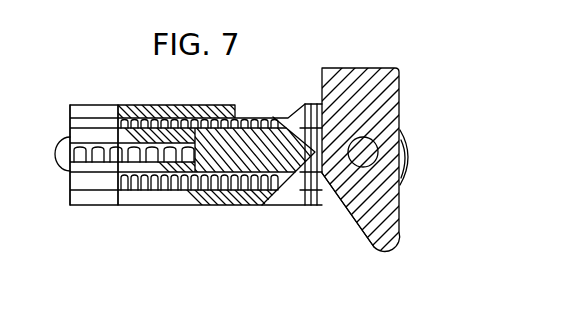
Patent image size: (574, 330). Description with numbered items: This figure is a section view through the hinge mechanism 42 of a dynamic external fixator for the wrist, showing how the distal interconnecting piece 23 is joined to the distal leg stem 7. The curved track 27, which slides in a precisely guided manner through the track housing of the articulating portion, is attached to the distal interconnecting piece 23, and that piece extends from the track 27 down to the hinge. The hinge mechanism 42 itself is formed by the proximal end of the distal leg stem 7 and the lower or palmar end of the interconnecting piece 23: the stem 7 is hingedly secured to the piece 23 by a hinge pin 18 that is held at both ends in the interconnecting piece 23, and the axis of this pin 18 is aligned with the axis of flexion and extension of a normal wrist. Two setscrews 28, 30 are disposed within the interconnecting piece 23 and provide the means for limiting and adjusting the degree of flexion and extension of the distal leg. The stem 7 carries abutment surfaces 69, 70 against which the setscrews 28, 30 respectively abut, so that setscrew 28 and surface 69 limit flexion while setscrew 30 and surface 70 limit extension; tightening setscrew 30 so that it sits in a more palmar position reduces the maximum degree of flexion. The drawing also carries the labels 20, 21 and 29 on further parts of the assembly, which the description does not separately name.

The distal leg stem 7 is at (375, 77).
The hinge pin 18 is at (368, 148).
The core pin 20 is at (306, 204).
The threaded sleeve 21 is at (260, 117).
The distal interconnecting piece 23 is at (252, 117).
The curved track 27 is at (68, 105).
The setscrew 28 is at (142, 104).
The rounded tip 29 is at (62, 168).
The setscrew 30 is at (141, 205).
The hinge mechanism 42 is at (424, 220).
The abutment surface 69 is at (318, 80).
The abutment surface 70 is at (360, 227).